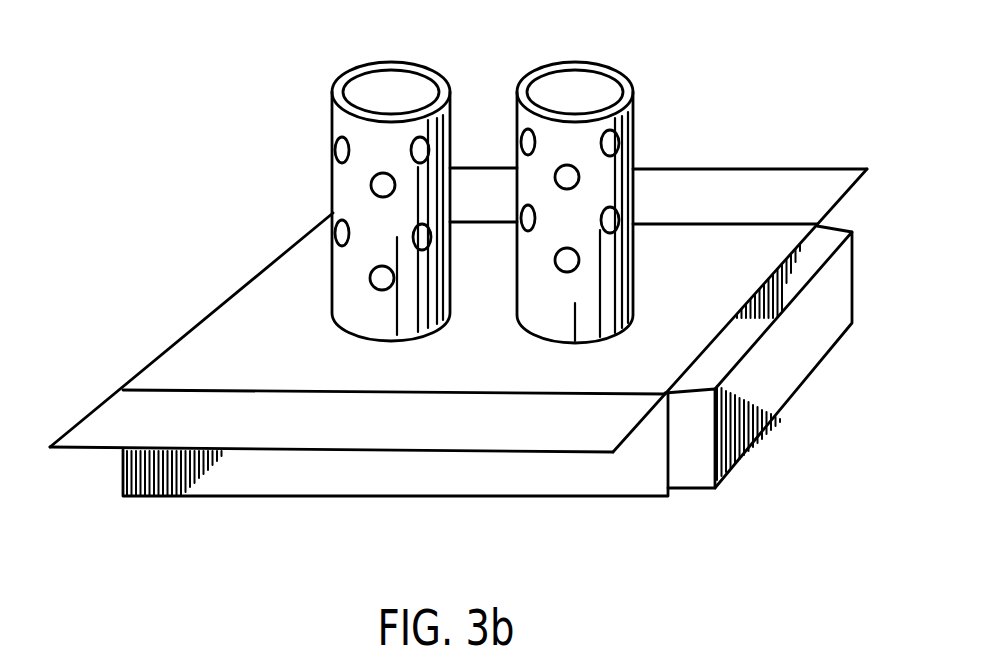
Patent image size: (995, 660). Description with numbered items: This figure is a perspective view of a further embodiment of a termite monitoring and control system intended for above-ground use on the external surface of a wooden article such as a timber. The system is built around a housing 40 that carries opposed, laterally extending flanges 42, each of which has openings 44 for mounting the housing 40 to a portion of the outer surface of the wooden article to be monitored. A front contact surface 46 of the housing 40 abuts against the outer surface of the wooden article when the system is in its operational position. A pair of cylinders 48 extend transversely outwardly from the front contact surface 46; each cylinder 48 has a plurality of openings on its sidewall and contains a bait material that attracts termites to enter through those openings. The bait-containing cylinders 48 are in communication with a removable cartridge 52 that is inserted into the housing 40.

The housing 40 is at (600, 463).
The flanges 42 is at (695, 180).
The openings 44 is at (774, 189).
The front contact surface 46 is at (213, 338).
The cylinders 48 is at (515, 120).
The removable cartridge 52 is at (800, 352).